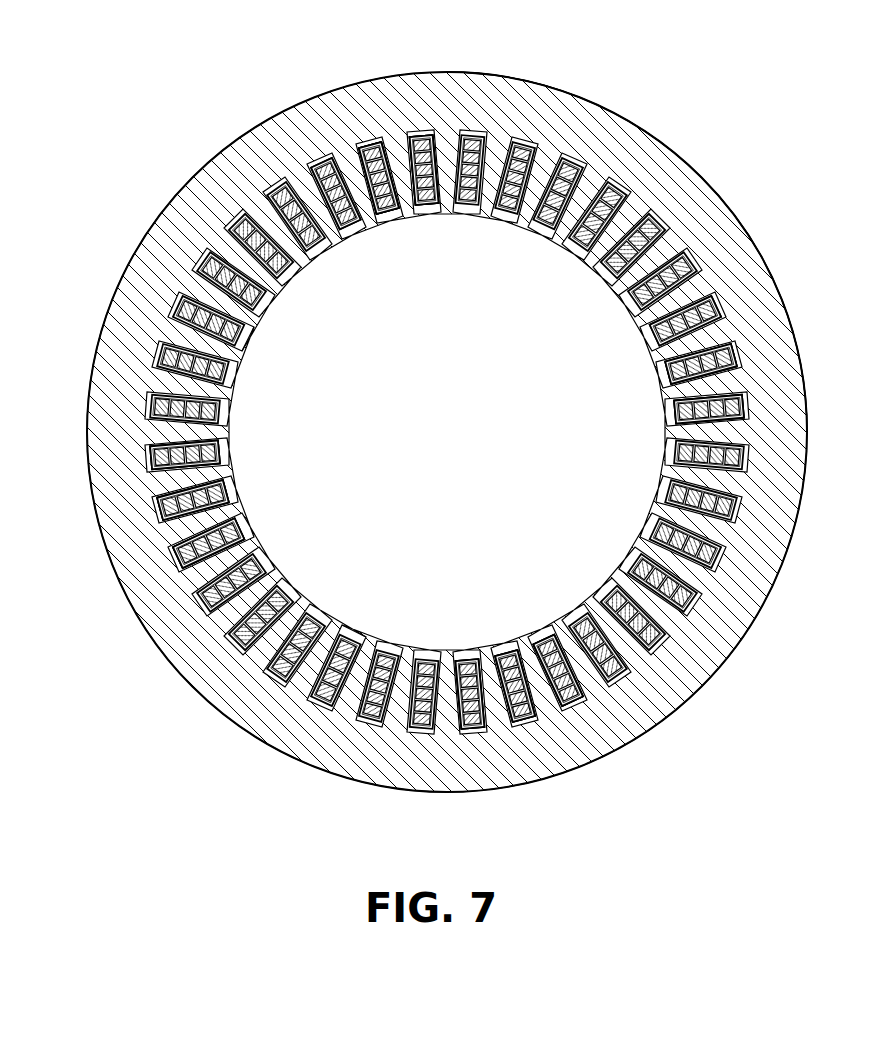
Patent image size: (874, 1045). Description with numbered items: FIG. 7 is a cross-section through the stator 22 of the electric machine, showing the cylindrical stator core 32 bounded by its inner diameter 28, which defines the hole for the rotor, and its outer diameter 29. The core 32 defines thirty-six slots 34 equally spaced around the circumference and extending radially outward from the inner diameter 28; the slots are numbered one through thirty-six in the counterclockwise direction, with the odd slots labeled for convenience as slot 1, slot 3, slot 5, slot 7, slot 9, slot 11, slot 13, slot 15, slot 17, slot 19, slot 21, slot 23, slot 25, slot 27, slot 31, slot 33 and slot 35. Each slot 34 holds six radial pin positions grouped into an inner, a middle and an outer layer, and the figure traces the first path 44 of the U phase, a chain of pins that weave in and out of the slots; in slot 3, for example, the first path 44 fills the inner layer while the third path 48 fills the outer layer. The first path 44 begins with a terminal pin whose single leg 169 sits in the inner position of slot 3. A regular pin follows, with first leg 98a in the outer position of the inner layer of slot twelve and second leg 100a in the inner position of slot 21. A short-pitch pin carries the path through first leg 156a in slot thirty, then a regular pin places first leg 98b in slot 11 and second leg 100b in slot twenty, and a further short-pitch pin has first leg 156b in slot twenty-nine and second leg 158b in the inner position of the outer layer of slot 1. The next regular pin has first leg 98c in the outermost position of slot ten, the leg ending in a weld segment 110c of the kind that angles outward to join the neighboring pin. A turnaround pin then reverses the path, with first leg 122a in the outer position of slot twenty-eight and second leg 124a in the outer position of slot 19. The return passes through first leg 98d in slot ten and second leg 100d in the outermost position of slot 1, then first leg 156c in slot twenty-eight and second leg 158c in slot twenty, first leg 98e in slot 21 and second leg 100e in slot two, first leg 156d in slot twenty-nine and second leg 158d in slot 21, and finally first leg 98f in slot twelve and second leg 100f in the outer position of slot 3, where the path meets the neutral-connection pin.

The stator 22 is at (710, 112).
The outer diameter 29 is at (788, 148).
The stator core 32 is at (597, 127).
The slots 34 is at (354, 635).
The inner diameter 28 is at (243, 368).
The first path 44 is at (361, 141).
The third path 48 is at (431, 176).
The single leg 169 is at (388, 212).
The first leg 98a is at (238, 530).
The first leg 98b is at (160, 510).
The first leg 98c is at (148, 463).
The first leg 98d is at (148, 457).
The first leg 98e is at (170, 518).
The first leg 98f is at (232, 537).
The second leg 100a is at (552, 632).
The second leg 100b is at (507, 650).
The second leg 100d is at (420, 135).
The second leg 100e is at (366, 150).
The second leg 100f is at (345, 217).
The conductor leg 110c is at (480, 733).
The first leg 122a is at (747, 407).
The second leg 124a is at (469, 733).
The first leg 156a is at (668, 325).
The first leg 156b is at (713, 347).
The first leg 156c is at (733, 417).
The first leg 156d is at (679, 381).
The second leg 158b is at (427, 150).
The second leg 158c is at (530, 700).
The second leg 158d is at (530, 640).
The slot 1 is at (424, 186).
The slot 3 is at (337, 207).
The slot 5 is at (267, 256).
The slot 7 is at (219, 326).
The slot 9 is at (198, 410).
The slot 11 is at (208, 498).
The slot 13 is at (243, 576).
The slot 15 is at (303, 636).
The slot 17 is at (382, 672).
The slot 19 is at (467, 679).
The slot 21 is at (552, 657).
The slot 23 is at (623, 609).
The slot 25 is at (671, 539).
The slot 27 is at (692, 455).
The slot 31 is at (648, 289).
The slot 33 is at (589, 229).
The slot 35 is at (511, 193).